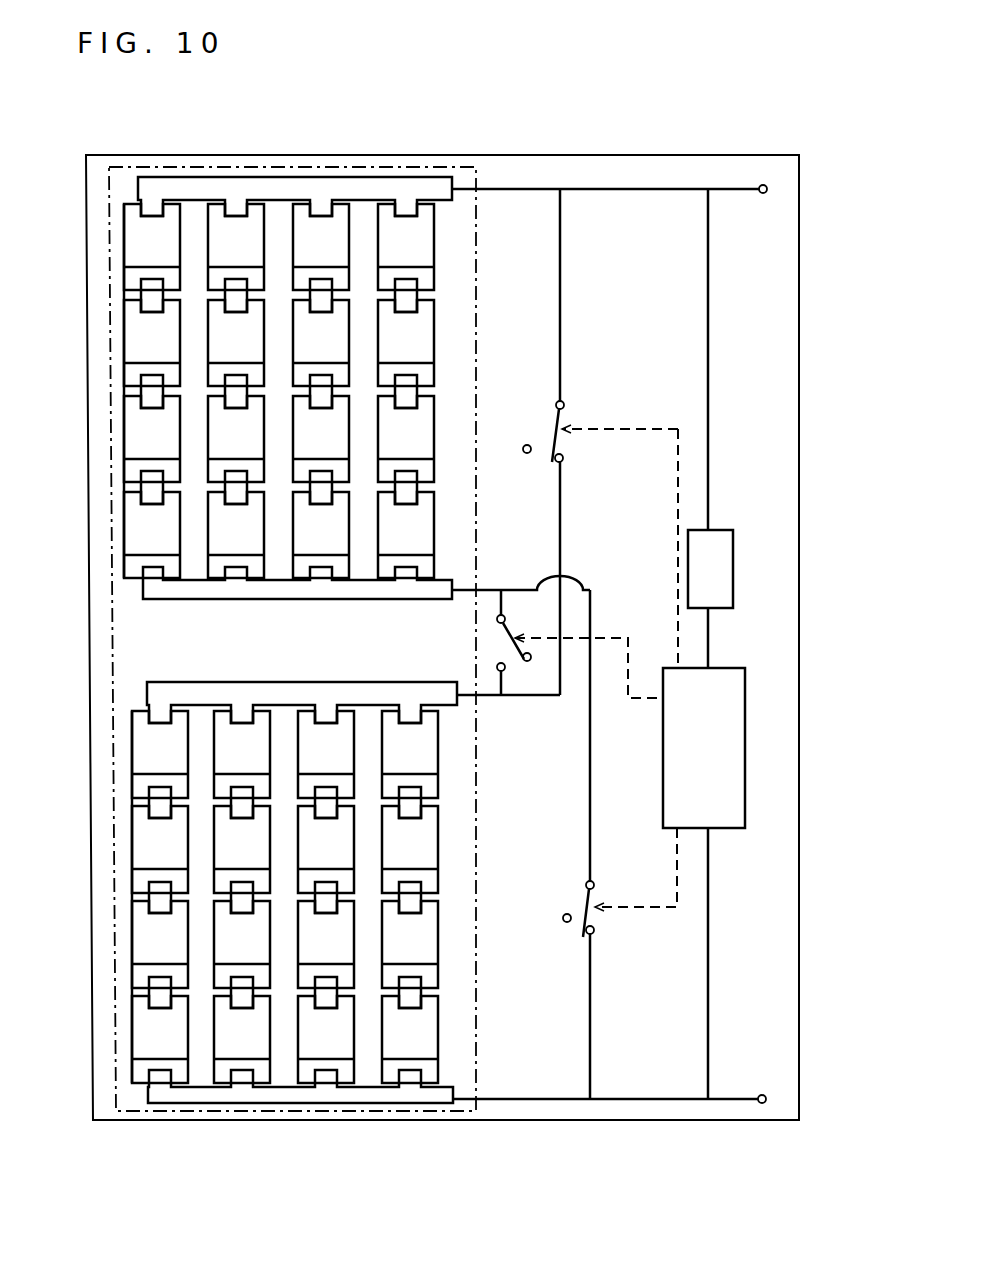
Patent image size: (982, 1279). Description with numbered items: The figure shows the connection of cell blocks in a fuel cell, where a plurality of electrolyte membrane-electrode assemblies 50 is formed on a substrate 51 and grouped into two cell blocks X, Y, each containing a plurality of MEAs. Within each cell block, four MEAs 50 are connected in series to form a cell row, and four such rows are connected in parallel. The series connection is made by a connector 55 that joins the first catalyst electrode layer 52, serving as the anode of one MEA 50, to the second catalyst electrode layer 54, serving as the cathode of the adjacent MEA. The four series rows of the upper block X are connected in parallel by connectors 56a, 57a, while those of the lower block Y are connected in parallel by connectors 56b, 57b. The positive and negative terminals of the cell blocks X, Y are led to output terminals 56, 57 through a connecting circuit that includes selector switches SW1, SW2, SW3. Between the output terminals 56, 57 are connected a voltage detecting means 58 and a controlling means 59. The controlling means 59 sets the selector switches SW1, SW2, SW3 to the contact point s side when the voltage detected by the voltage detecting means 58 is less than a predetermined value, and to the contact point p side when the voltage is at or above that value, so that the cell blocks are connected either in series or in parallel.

The electrolyte membrane-electrode assembly 50 is at (420, 245).
The substrate 51 is at (768, 289).
The first catalyst electrode layer 52 is at (128, 277).
The second catalyst electrode layer 54 is at (135, 237).
The connector 55 is at (143, 302).
The output terminal 56 is at (742, 186).
The connector 56a is at (367, 190).
The connector 56b is at (300, 695).
The output terminal 57 is at (740, 1102).
The connector 57a is at (272, 592).
The connector 57b is at (275, 1096).
The voltage detecting means 58 is at (710, 428).
The controlling means 59 is at (704, 883).
The selector switch SW1 is at (558, 420).
The selector switch SW2 is at (592, 915).
The selector switch SW3 is at (511, 632).
The cell block X is at (284, 207).
The cell block Y is at (200, 1068).